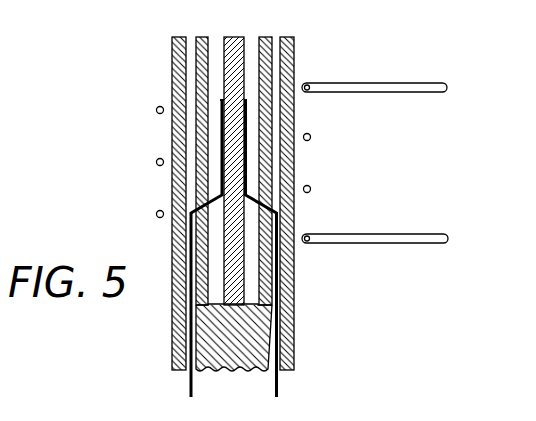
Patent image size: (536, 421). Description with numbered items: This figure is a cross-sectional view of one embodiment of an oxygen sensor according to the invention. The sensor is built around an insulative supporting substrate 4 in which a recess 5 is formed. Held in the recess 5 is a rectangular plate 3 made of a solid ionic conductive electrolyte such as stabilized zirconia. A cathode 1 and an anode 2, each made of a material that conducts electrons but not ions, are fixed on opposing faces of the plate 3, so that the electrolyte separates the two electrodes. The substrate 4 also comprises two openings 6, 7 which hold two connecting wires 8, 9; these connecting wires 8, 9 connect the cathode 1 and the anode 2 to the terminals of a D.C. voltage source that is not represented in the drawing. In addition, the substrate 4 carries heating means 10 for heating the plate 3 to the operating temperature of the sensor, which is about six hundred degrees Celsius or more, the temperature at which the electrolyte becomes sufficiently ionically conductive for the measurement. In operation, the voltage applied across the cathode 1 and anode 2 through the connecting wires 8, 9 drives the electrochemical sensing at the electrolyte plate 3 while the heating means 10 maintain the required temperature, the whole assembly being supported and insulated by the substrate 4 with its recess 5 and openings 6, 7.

The cathode 1 is at (220, 148).
The anode 2 is at (247, 157).
The rectangular plate 3 is at (235, 36).
The insulative supporting substrate 4 is at (178, 88).
The recess 5 is at (253, 48).
The opening 6 is at (190, 58).
The opening 7 is at (275, 57).
The connecting wire 8 is at (189, 391).
The connecting wire 9 is at (278, 391).
The heating means 10 is at (413, 92).